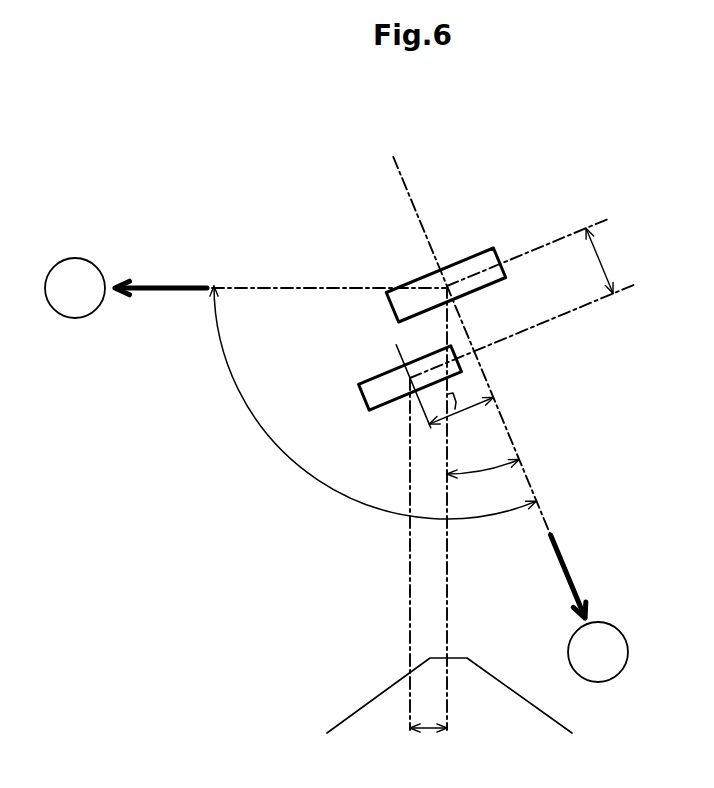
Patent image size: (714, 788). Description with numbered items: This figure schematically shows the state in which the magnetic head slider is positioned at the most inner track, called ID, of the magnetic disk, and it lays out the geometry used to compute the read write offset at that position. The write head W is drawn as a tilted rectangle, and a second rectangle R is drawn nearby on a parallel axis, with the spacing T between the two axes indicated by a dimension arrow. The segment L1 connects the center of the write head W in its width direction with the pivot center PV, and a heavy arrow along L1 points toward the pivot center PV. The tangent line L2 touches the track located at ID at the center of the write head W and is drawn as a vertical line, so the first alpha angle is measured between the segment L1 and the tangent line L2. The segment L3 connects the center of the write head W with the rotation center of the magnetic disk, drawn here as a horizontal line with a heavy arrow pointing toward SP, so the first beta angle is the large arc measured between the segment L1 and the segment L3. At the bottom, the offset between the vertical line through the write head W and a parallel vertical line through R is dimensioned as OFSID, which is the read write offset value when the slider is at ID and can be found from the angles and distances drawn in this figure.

The write head W is at (467, 258).
The retainer / reference member R is at (369, 380).
The distance between axes of W and R T is at (606, 260).
The segment connecting write head center and pivot center L1 is at (506, 431).
The tangent line L2 is at (447, 588).
The segment connecting write head center and disk rotation center L3 is at (268, 287).
The direction toward SP is at (126, 288).
The pivot center PV is at (589, 608).
The read write offset value at ID OFSID is at (428, 730).